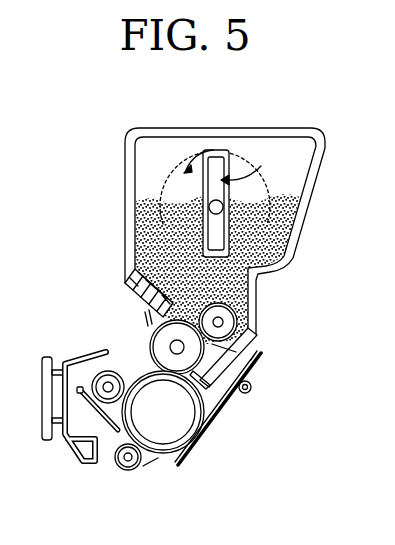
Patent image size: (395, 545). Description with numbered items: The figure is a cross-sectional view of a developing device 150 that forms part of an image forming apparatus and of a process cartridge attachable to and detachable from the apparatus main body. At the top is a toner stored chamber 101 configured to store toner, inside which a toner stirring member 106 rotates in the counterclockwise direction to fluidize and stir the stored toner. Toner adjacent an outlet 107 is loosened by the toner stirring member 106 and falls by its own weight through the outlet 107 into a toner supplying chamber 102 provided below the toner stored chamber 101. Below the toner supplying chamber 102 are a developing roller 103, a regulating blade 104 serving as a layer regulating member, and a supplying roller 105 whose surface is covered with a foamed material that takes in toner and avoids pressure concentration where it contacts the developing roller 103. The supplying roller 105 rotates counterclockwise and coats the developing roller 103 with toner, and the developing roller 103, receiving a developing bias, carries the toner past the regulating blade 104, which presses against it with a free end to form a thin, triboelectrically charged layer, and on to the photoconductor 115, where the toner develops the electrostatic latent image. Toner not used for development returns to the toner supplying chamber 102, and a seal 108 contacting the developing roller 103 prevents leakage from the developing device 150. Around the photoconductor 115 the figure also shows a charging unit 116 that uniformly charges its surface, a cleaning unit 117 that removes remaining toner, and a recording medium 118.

The developing device 150 is at (84, 164).
The toner stored chamber 101 is at (303, 164).
The toner stirring member 106 is at (261, 166).
The outlet 107 is at (240, 283).
The regulating blade 104 is at (130, 272).
The developing roller 103 is at (148, 345).
The toner supplying chamber 102 is at (247, 302).
The supplying roller 105 is at (256, 326).
The seal 108 is at (225, 346).
The photoconductor 115 is at (166, 453).
The recording medium 118 is at (218, 408).
The charging unit 116 is at (97, 370).
The cleaning unit 117 is at (120, 422).